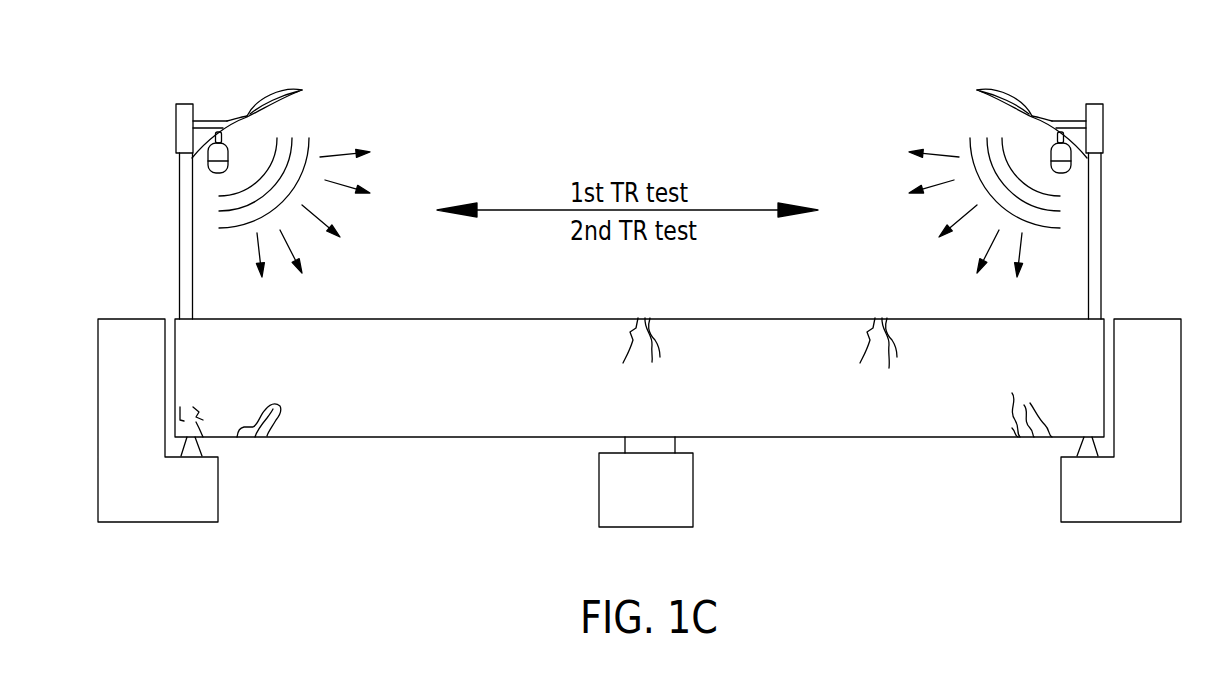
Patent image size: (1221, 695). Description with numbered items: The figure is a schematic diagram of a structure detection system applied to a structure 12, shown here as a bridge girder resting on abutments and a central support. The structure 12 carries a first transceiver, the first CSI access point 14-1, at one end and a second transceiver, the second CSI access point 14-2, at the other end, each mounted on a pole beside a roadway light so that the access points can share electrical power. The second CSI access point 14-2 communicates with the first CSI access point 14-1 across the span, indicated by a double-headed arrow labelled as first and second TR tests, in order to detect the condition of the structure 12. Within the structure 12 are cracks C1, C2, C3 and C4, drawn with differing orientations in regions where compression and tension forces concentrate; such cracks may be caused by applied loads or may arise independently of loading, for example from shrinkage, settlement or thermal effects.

The structure 12 is at (388, 430).
The first CSI access point 14-1 is at (202, 165).
The second CSI access point 14-2 is at (1077, 165).
The crack C1 is at (667, 340).
The crack C2 is at (888, 340).
The crack C3 is at (1008, 437).
The crack C4 is at (253, 438).